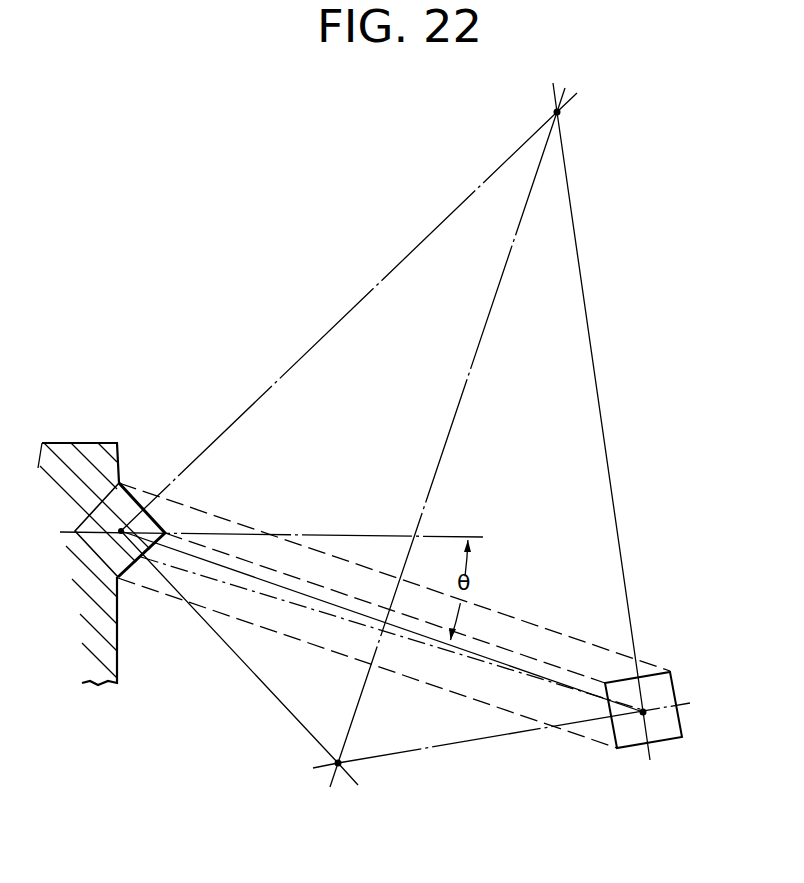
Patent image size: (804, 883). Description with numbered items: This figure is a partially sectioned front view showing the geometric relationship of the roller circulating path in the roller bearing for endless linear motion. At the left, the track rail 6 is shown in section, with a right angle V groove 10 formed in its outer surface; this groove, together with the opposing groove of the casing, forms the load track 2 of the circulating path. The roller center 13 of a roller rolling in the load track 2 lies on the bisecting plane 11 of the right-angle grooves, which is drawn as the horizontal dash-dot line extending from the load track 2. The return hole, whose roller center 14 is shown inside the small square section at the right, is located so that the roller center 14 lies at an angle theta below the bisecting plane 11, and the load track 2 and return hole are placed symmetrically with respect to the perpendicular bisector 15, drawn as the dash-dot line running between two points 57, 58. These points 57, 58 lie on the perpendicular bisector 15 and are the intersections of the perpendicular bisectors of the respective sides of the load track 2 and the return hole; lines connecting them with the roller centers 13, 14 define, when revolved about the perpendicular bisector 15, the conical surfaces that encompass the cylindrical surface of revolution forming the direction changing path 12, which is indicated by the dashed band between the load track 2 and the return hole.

The load track 2 is at (133, 504).
The track rail 6 is at (75, 622).
The right angle V groove 10 is at (660, 739).
The bisecting plane 11 is at (484, 538).
The direction changing path 12 is at (527, 703).
The roller center 13 is at (122, 534).
The roller center 14 is at (643, 714).
The perpendicular bisector 15 is at (447, 440).
The point 57 is at (559, 114).
The point 58 is at (339, 766).